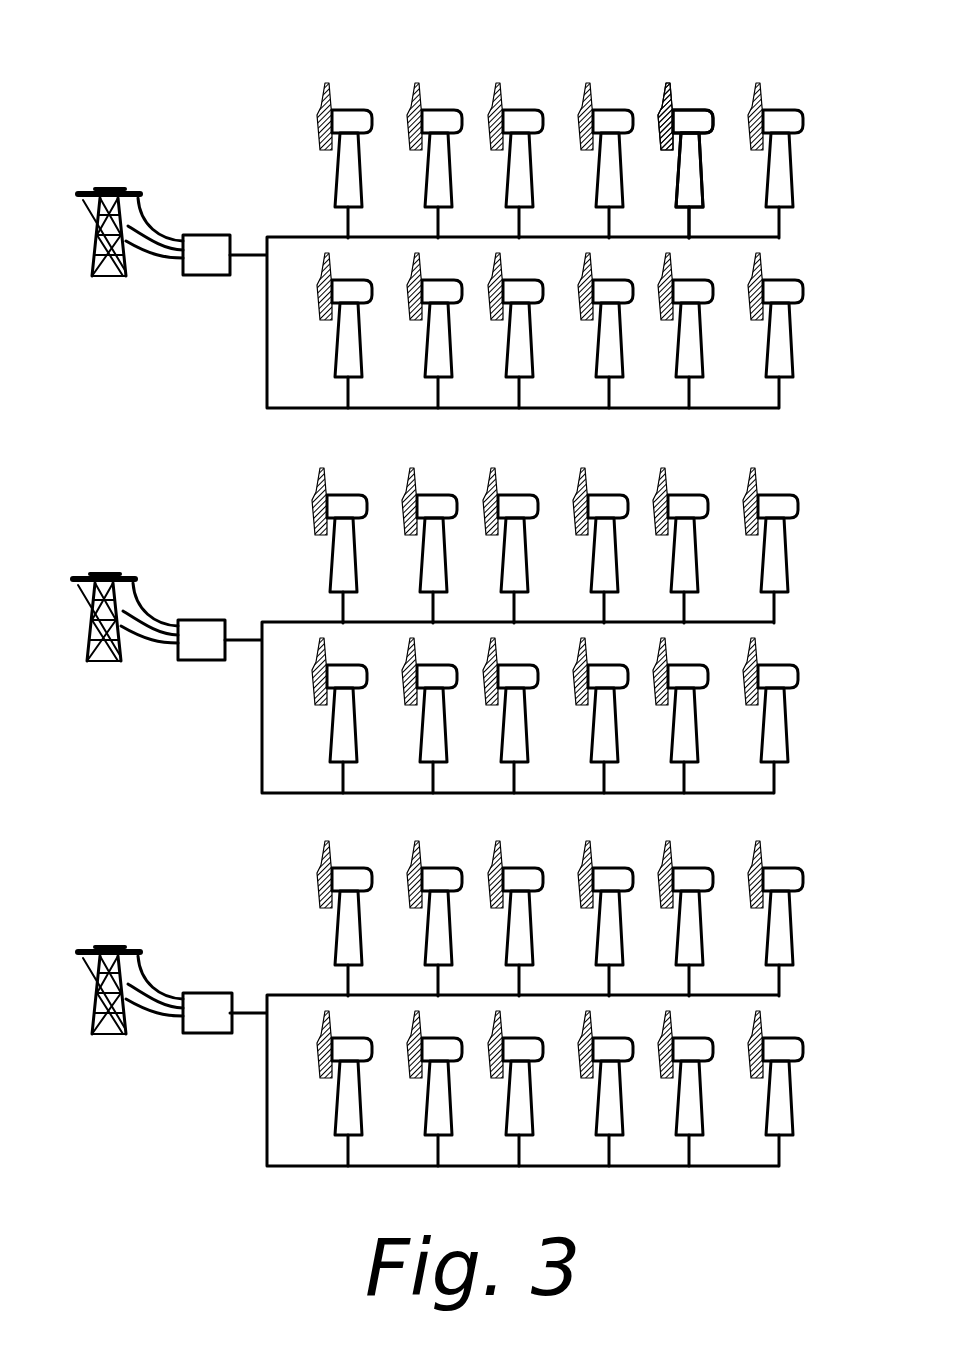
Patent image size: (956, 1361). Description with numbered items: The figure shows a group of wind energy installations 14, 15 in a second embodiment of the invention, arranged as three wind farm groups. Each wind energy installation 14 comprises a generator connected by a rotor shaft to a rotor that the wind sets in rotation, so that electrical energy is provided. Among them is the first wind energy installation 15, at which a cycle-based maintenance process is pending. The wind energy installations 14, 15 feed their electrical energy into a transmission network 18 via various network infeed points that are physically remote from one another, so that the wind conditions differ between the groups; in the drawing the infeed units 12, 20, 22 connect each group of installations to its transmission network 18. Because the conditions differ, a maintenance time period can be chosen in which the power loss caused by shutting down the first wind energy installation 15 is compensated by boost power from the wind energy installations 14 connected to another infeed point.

The first wind farm converter/connection unit 12 is at (205, 277).
The wind energy installation 14 is at (340, 178).
The first wind energy installation 15 is at (683, 110).
The transmission network 18 is at (88, 185).
The second wind farm connection unit 20 is at (197, 662).
The third wind farm connection unit 22 is at (197, 1035).